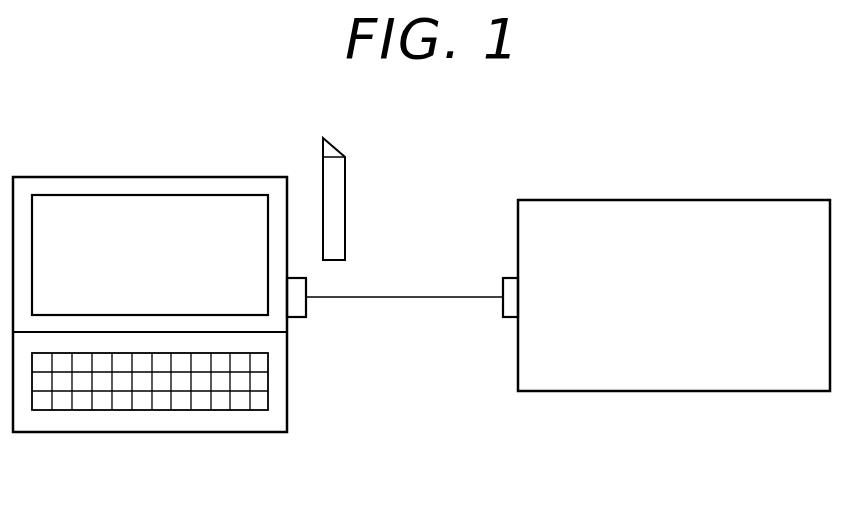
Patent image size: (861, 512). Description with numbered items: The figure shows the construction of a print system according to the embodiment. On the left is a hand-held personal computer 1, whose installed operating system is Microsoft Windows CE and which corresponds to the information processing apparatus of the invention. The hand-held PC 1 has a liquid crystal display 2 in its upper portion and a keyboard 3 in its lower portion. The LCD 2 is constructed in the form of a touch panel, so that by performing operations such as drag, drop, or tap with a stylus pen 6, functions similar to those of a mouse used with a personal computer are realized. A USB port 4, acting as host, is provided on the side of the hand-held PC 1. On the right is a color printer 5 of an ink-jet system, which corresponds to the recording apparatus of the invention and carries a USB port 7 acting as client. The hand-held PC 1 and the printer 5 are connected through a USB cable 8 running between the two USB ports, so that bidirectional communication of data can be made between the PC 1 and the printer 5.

The hand-held personal computer 1 is at (213, 176).
The liquid crystal display 2 is at (75, 195).
The keyboard 3 is at (82, 410).
The USB port (host) 4 is at (296, 318).
The color printer 5 is at (765, 199).
The stylus pen 6 is at (346, 183).
The USB port (client) 7 is at (511, 318).
The USB cable 8 is at (409, 296).